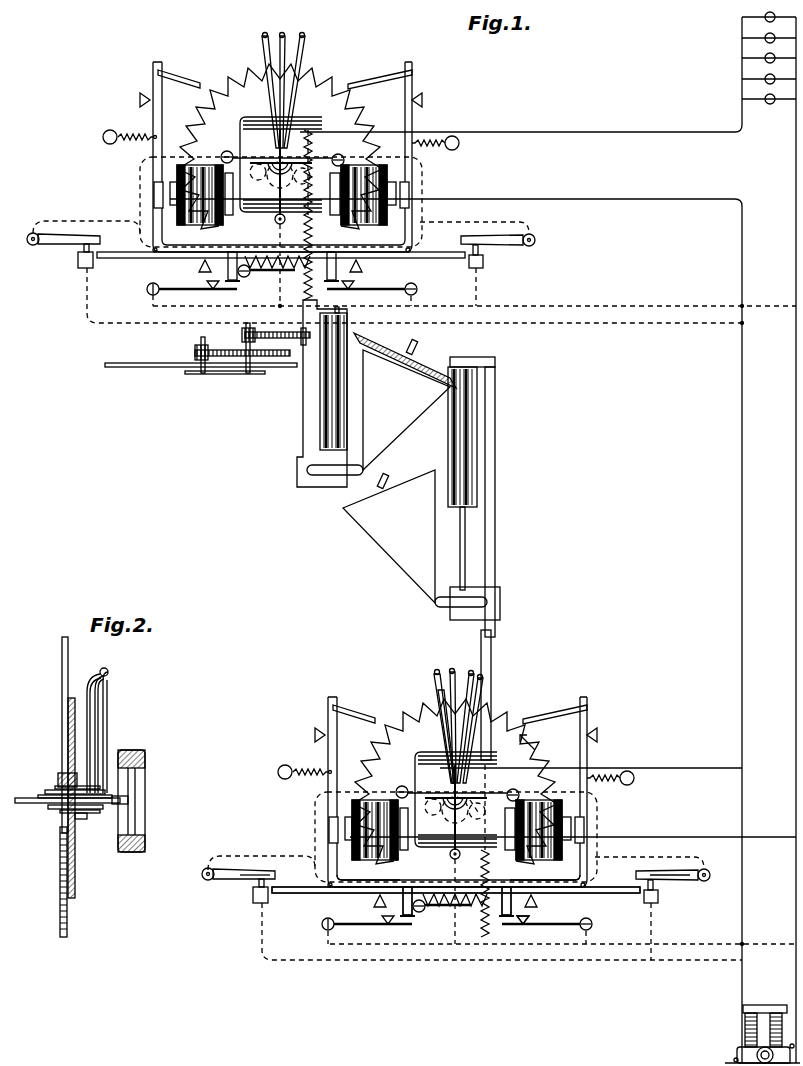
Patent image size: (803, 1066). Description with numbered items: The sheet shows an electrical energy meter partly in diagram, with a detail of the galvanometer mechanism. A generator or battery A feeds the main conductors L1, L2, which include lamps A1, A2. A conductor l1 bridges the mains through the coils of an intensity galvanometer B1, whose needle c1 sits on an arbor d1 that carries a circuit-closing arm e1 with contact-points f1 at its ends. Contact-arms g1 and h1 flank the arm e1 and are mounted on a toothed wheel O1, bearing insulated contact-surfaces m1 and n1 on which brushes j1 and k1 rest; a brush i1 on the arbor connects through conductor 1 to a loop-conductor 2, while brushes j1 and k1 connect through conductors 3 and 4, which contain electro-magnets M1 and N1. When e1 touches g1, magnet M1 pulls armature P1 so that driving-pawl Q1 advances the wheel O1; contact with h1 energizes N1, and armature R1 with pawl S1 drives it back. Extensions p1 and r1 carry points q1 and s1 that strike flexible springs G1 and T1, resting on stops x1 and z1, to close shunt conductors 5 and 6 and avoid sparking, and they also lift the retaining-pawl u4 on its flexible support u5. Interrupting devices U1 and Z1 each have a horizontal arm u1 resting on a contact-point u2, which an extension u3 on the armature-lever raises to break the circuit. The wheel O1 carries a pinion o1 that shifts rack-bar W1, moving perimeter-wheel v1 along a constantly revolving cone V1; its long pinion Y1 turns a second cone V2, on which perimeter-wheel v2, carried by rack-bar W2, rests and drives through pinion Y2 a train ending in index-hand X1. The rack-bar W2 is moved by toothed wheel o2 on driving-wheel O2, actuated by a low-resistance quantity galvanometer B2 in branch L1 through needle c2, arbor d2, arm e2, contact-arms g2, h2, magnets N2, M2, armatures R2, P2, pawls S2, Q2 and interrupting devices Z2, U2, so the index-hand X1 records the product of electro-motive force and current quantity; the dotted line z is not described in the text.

In FIG. 1, the contact-arm g2 is at (263, 35).
In FIG. 1, the circuit-closing arm e2 is at (285, 81).
In FIG. 1, the contact-arm h2 is at (304, 36).
In FIG. 1, the driving-pawl S2 is at (179, 70).
In FIG. 1, the driving-pawl Q2 is at (380, 71).
In FIG. 1, the driving-wheel O2 is at (280, 146).
In FIG. 1, the galvanometer B2 is at (300, 119).
In FIG. 1, the electro-magnet N2 is at (200, 170).
In FIG. 1, the electro-magnet M2 is at (358, 172).
In FIG. 1, the toothed wheel o2 is at (280, 159).
In FIG. 1, the needle c2 is at (268, 168).
In FIG. 1, the arbor d2 is at (276, 190).
In FIG. 1, the armature R2 is at (154, 190).
In FIG. 1, the armature P2 is at (409, 192).
In FIG. 1, the circuit-interrupting device Z2 is at (63, 250).
In FIG. 1, the circuit-interrupting device U2 is at (498, 251).
In FIG. 1, the main-line conductor L1 is at (456, 581).
In FIG. 1, the main-line conductor L2 is at (786, 540).
In FIG. 1, the electric lamp A1 is at (756, 98).
In FIG. 1, the electric lamp A2 is at (756, 55).
In FIG. 1, the wire z is at (474, 298).
In FIG. 1, the index-hand X1 is at (207, 358).
In FIG. 1, the rack-bar W2 is at (308, 383).
In FIG. 1, the pinion Y2 is at (325, 421).
In FIG. 1, the second cone V2 is at (405, 401).
In FIG. 1, the second perimeter-wheel v2 is at (336, 477).
In FIG. 1, the long pinion Y1 is at (470, 460).
In FIG. 1, the cone V1 is at (389, 536).
In FIG. 1, the perimeter-wheel v1 is at (455, 610).
In FIG. 1, the rack-bar W1 is at (491, 700).
In FIG. 2, the rack-bar W1 is at (60, 872).
In FIG. 1, the toothed wheel O1 is at (455, 781).
In FIG. 2, the toothed wheel O1 is at (68, 744).
In FIG. 1, the driving-pawl S1 is at (362, 716).
In FIG. 1, the driving-pawl Q1 is at (555, 708).
In FIG. 1, the electro-magnet N1 is at (373, 812).
In FIG. 1, the electro-magnet M1 is at (535, 812).
In FIG. 1, the armature R1 is at (329, 830).
In FIG. 1, the armature P1 is at (584, 830).
In FIG. 1, the galvanometer B1 is at (428, 748).
In FIG. 2, the galvanometer B1 is at (135, 801).
In FIG. 1, the toothed wheel o1 is at (468, 800).
In FIG. 2, the toothed wheel o1 is at (60, 780).
In FIG. 1, the needle c1 is at (440, 805).
In FIG. 2, the needle c1 is at (128, 797).
In FIG. 1, the arbor d1 is at (450, 822).
In FIG. 2, the arbor d1 is at (42, 808).
In FIG. 1, the contact-brush i1 is at (445, 858).
In FIG. 1, the contact-brush k1 is at (453, 787).
In FIG. 1, the insulated contact-surface n1 is at (440, 800).
In FIG. 1, the insulated contact-surface m1 is at (485, 797).
In FIG. 1, the contact-brush j1 is at (485, 825).
In FIG. 1, the contact-arm g1 is at (435, 672).
In FIG. 2, the contact-arm g1 is at (100, 688).
In FIG. 1, the contact-point f1 is at (459, 713).
In FIG. 1, the contact-arm h1 is at (484, 678).
In FIG. 2, the contact-arm h1 is at (87, 695).
In FIG. 1, the circuit-closing arm e1 is at (440, 693).
In FIG. 2, the circuit-closing arm e1 is at (108, 725).
In FIG. 1, the circuit-interrupting device Z1 is at (238, 883).
In FIG. 1, the circuit-interrupting device U1 is at (673, 884).
In FIG. 1, the arm u1 is at (268, 874).
In FIG. 1, the resting contact-point u2 is at (463, 893).
In FIG. 1, the extension u3 is at (302, 893).
In FIG. 1, the extension r1 is at (357, 894).
In FIG. 1, the extension p1 is at (542, 894).
In FIG. 1, the retaining-pawl u4 is at (455, 908).
In FIG. 1, the flexible support u5 is at (439, 911).
In FIG. 1, the flexible contact-spring T1 is at (360, 921).
In FIG. 1, the resting-stop z1 is at (385, 921).
In FIG. 1, the contact-point s1 is at (403, 906).
In FIG. 1, the contact-point q1 is at (512, 901).
In FIG. 1, the resting-stop x1 is at (529, 912).
In FIG. 1, the flexible contact-spring G1 is at (558, 922).
In FIG. 1, the conductor l1 is at (573, 792).
In FIG. 1, the electric generator A is at (762, 1024).
In FIG. 1, the conductor 1 is at (358, 584).
In FIG. 1, the loop-conductor 2 is at (529, 931).
In FIG. 1, the conductor 3 is at (562, 591).
In FIG. 1, the conductor 4 is at (415, 600).
In FIG. 1, the conductor 5 is at (505, 550).
In FIG. 1, the conductor 6 is at (196, 549).